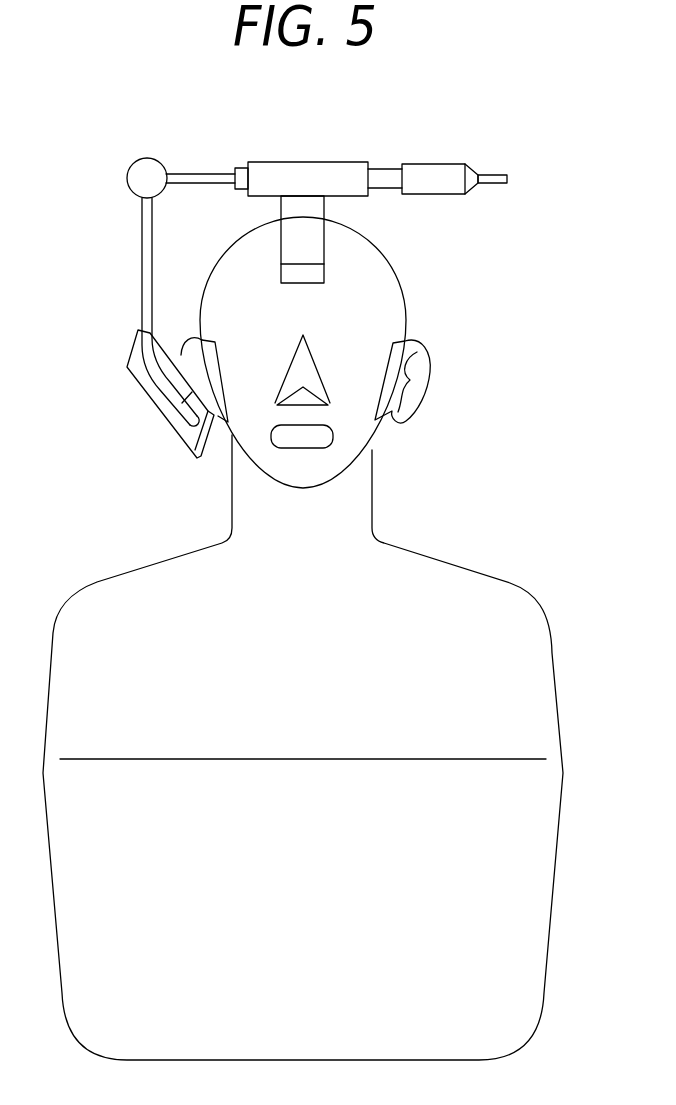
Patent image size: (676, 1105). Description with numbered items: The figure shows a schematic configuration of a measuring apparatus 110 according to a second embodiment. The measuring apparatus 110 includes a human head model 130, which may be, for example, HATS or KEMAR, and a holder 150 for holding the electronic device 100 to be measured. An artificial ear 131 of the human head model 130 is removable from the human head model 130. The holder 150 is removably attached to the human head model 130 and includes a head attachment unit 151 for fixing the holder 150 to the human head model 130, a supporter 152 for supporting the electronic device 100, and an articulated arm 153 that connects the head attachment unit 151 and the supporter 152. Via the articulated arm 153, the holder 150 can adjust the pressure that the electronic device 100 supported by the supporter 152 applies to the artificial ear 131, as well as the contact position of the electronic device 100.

The electronic device 100 is at (133, 360).
The measuring apparatus 110 is at (408, 279).
The human head model 130 is at (353, 326).
The artificial ear 131 is at (428, 382).
The holder 150 is at (312, 152).
The head attachment unit 151 is at (302, 247).
The supporter 152 is at (178, 437).
The articulated arm 153 is at (128, 167).